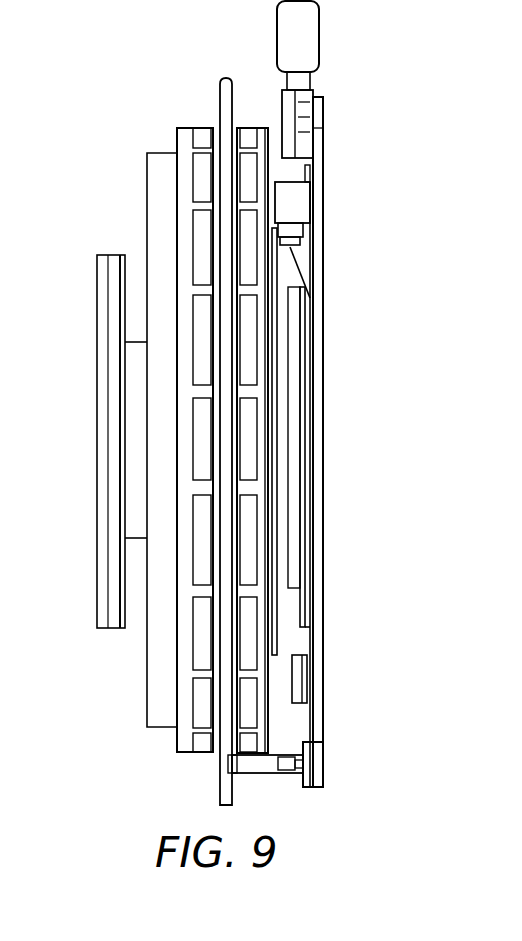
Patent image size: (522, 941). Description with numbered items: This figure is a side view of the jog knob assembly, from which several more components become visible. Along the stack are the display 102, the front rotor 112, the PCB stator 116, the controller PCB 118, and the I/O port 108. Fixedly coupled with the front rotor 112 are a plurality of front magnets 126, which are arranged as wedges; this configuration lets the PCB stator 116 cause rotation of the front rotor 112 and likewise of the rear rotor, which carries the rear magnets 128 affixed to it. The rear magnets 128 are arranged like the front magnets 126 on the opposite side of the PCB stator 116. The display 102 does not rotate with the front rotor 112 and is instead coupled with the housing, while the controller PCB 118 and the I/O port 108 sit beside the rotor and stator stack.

The display 102 is at (102, 420).
The I/O port 108 is at (303, 43).
The front rotor 112 is at (152, 180).
The PCB stator 116 is at (222, 93).
The controller PCB 118 is at (315, 256).
The front magnets 126 is at (200, 466).
The rear magnets 128 is at (247, 610).